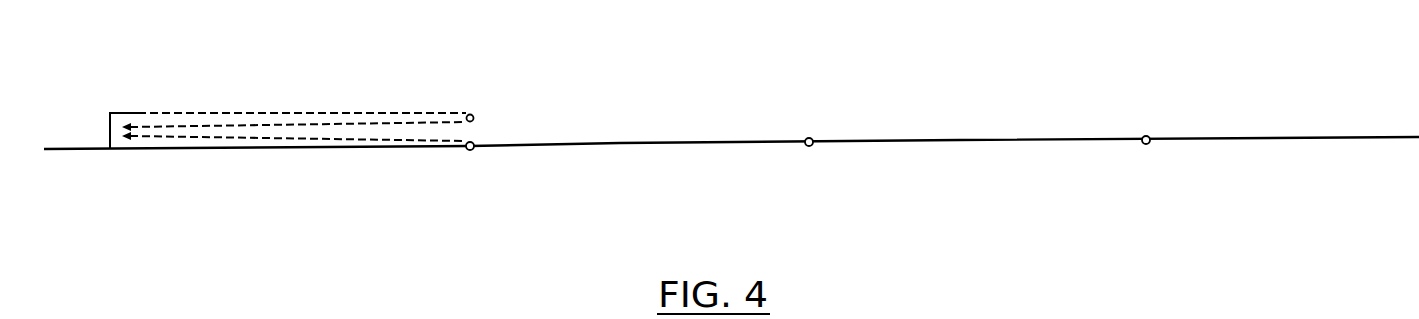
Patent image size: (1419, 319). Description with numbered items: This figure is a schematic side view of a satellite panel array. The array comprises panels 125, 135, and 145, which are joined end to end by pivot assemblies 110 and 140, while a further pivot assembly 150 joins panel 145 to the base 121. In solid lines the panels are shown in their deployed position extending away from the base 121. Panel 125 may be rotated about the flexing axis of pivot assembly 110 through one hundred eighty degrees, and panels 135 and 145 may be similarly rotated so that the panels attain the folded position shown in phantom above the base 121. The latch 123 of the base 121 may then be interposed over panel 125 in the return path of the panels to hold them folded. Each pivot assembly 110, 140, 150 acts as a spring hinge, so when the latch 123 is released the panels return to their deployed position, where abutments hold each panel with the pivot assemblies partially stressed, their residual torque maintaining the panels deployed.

The pivot assembly 110 is at (473, 115).
The base 121 is at (68, 152).
The latch 123 is at (115, 112).
The panel 125 is at (253, 112).
The panel 135 is at (303, 125).
The pivot assembly 140 is at (128, 151).
The panel 145 is at (227, 138).
The pivot assembly 150 is at (468, 150).